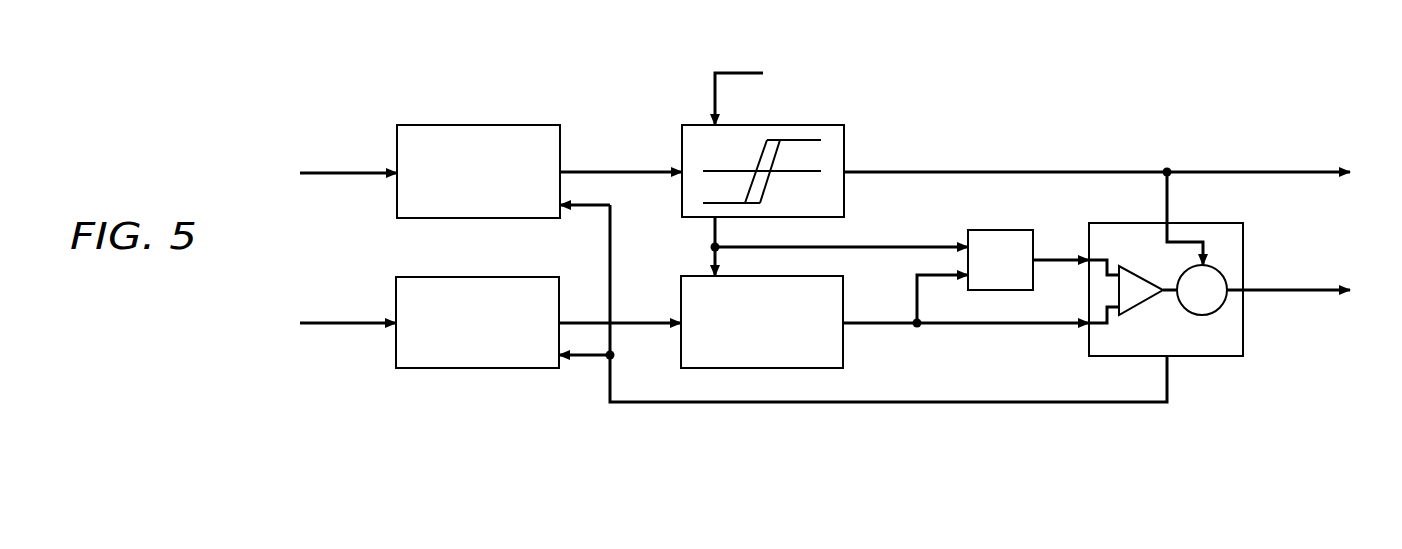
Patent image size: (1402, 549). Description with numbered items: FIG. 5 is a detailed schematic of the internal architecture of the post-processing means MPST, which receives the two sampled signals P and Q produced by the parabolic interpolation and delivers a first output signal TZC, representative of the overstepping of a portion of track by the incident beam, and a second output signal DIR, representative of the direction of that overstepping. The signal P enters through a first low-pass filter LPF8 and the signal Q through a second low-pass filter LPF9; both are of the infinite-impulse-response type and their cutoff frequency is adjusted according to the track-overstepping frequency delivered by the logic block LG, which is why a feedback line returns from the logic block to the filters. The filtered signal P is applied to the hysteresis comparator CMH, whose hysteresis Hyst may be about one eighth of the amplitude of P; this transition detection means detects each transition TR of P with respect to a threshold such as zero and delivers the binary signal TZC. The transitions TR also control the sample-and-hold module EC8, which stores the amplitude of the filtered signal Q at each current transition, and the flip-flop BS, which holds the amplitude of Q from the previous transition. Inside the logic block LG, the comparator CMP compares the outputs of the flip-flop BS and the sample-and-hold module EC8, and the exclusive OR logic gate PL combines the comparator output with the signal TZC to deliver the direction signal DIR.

The first sampled input signal P is at (339, 173).
The second sampled input signal Q is at (337, 323).
The low-pass filter LPF8 is at (478, 171).
The low-pass filter LPF9 is at (477, 322).
The hysteresis Hyst is at (760, 92).
The hysteresis comparator CMH is at (845, 151).
The first output signal TZC is at (1117, 170).
The transition TR is at (710, 248).
The sample-and-hold module EC8 is at (762, 322).
The flip-flop BS is at (1000, 230).
The logic block LG is at (1193, 264).
The comparator CMP is at (1143, 305).
The exclusive OR logic gate PL is at (1202, 290).
The second output signal DIR is at (1307, 290).
The post-processing means MPST is at (1076, 116).